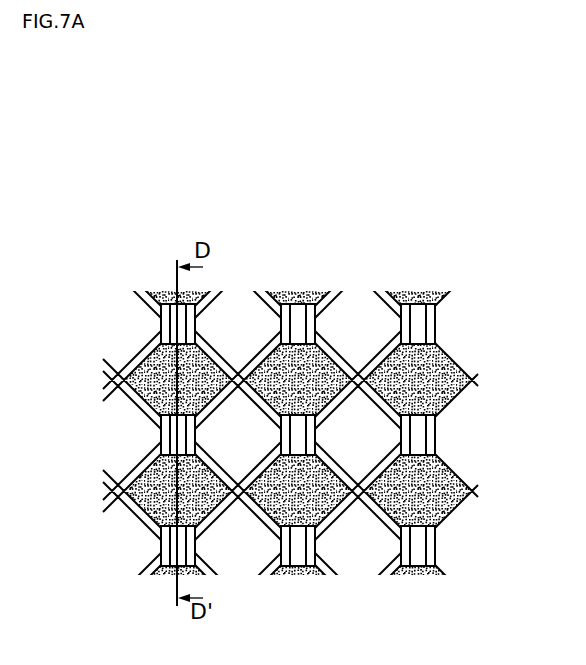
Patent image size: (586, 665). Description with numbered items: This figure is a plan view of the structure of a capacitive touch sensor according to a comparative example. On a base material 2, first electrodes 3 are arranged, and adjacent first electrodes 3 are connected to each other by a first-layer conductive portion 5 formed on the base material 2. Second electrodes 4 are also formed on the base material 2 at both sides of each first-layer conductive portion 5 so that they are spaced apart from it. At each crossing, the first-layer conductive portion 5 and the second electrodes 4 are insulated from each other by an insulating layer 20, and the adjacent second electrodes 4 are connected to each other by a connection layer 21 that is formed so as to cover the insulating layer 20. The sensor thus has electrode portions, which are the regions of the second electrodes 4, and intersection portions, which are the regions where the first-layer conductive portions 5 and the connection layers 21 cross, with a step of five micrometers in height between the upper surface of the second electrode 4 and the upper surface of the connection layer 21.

The base material 2 is at (302, 435).
The first electrode 3 is at (244, 336).
The second electrode 4 is at (150, 347).
The first-layer conductive portion 5 is at (161, 431).
The insulating layer 20 is at (197, 441).
The connection layer 21 is at (161, 438).